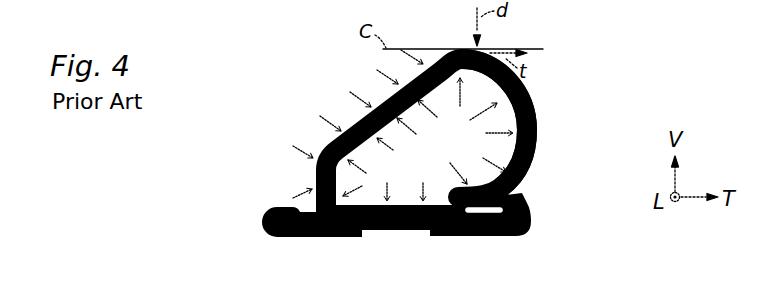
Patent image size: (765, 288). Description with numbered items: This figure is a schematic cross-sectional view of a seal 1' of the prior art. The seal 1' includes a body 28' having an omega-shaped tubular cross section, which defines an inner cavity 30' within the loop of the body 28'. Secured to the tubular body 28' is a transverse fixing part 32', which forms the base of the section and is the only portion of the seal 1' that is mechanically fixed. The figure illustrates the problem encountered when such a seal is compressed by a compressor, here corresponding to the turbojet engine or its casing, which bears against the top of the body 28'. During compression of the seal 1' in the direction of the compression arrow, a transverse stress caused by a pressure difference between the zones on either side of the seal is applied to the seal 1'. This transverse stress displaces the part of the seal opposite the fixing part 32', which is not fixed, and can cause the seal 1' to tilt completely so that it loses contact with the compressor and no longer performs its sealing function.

The seal 1' is at (433, 162).
The body 28' is at (457, 136).
The inner cavity 30' is at (525, 123).
The transverse fixing part 32' is at (405, 229).